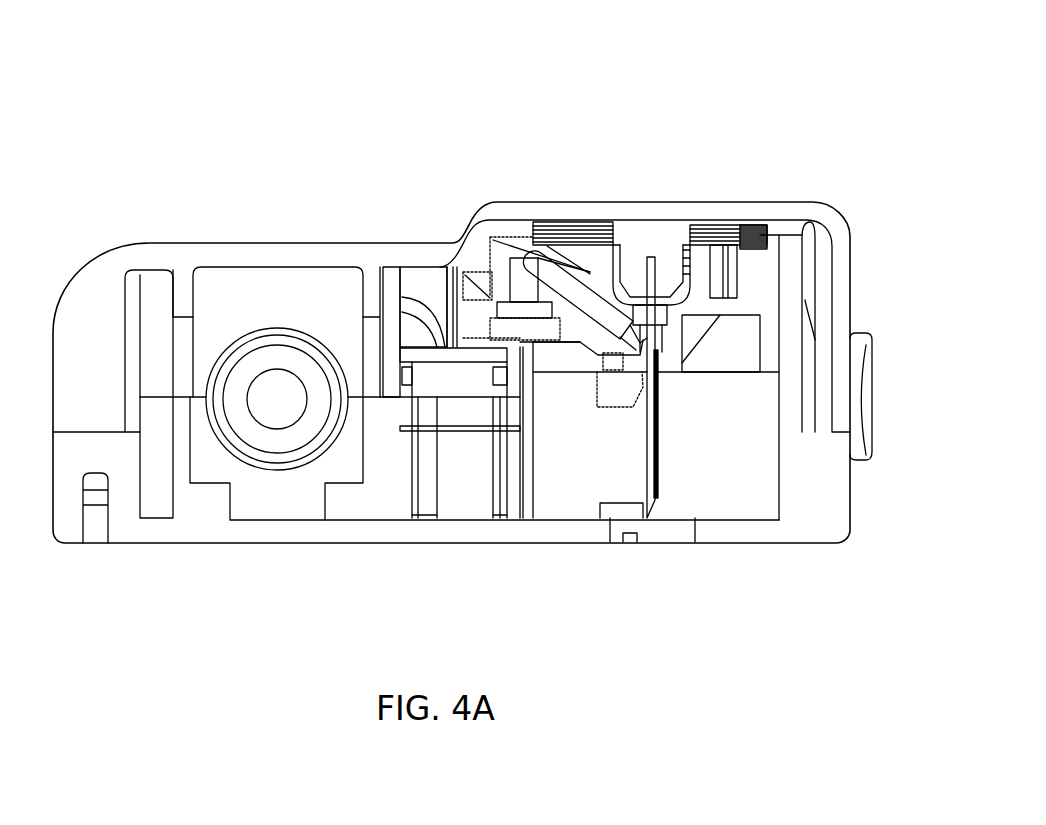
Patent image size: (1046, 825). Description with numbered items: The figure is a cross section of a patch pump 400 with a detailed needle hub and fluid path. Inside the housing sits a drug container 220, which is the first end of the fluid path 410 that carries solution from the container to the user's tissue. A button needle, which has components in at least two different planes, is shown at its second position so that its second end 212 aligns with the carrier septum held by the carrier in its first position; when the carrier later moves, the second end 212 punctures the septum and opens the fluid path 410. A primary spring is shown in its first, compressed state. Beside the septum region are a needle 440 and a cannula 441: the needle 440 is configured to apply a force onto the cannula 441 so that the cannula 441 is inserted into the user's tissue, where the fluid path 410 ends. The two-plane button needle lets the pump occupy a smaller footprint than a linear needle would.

The patch pump 400 is at (500, 105).
The drug container 220 is at (277, 385).
The second end of button needle 212 is at (523, 413).
The fluid path 410 is at (583, 300).
The needle 440 is at (646, 260).
The cannula 441 is at (664, 468).